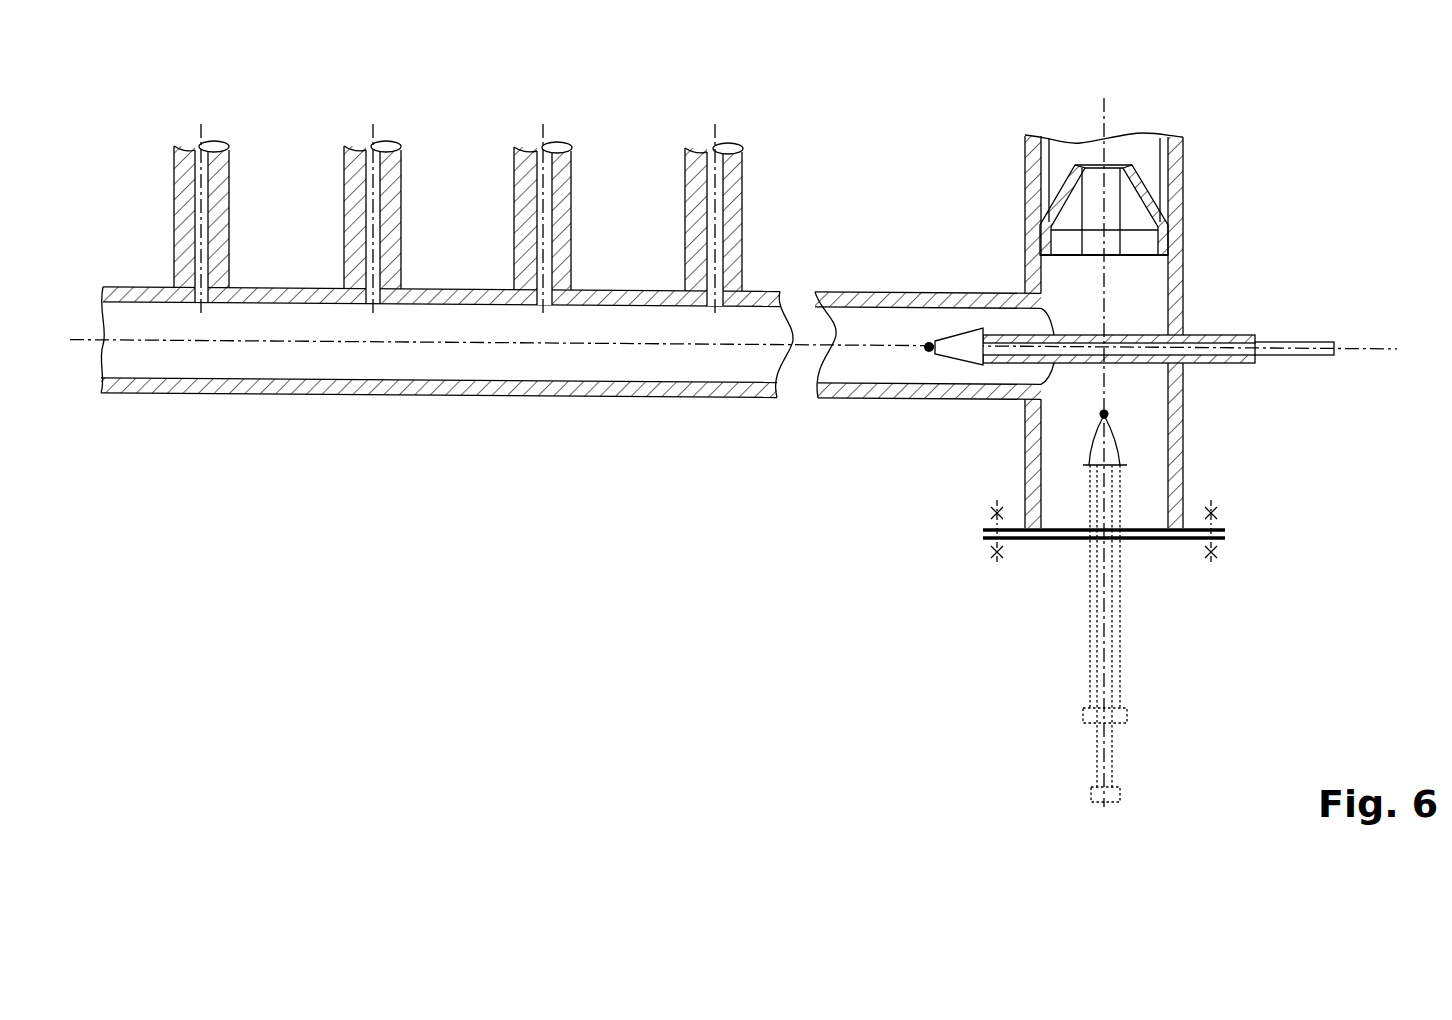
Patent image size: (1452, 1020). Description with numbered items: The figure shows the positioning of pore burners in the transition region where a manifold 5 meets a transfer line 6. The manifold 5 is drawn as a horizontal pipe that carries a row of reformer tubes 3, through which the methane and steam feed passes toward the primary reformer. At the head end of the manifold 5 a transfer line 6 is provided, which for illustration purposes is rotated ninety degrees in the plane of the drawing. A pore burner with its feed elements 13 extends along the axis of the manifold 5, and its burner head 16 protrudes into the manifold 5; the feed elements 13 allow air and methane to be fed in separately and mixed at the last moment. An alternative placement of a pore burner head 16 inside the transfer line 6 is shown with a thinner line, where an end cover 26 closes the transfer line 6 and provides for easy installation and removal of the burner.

The reformer tubes 3 is at (335, 187).
The manifold 5 is at (453, 390).
The transfer line 6 is at (1185, 148).
The feed elements 13 is at (1207, 346).
The burner head 16 is at (960, 350).
The end cover 26 is at (1043, 538).